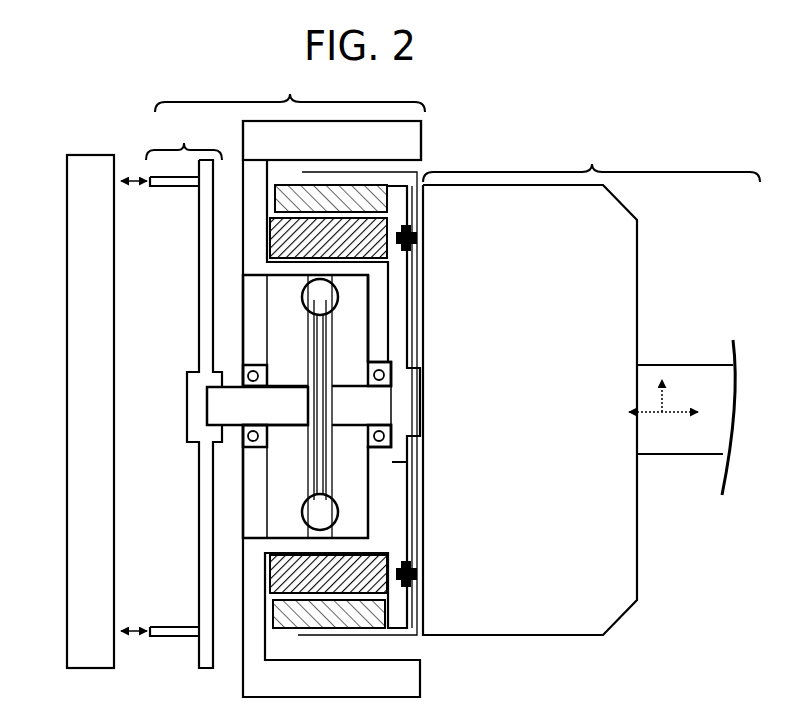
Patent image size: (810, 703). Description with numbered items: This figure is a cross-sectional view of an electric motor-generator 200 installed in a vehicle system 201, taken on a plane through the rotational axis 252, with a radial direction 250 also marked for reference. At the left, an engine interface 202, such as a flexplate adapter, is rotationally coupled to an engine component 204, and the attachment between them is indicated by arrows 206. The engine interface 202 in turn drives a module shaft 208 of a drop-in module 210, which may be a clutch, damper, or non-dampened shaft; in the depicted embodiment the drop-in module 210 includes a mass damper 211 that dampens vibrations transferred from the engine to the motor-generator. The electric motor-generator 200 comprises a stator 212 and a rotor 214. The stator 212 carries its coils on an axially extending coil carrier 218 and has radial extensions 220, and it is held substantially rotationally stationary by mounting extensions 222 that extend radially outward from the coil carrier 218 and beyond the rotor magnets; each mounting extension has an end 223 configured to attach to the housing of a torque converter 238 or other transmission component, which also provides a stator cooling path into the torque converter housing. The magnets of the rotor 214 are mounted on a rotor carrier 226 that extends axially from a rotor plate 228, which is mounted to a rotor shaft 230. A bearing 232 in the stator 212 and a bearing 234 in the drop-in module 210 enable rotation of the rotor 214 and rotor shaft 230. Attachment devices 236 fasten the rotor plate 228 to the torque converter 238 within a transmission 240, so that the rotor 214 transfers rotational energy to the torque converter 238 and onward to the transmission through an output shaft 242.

The electric motor-generator 200 is at (290, 89).
The vehicle system 201 is at (728, 122).
The engine interface 202 is at (184, 139).
The engine component 204 is at (67, 182).
The arrows 206 is at (141, 185).
The module shaft 208 is at (233, 386).
The drop-in module 210 is at (240, 287).
The mass damper 211 is at (294, 480).
The stator 212 is at (235, 243).
The rotor 214 is at (372, 167).
The coil carrier 218 is at (283, 277).
The radial extensions 220 is at (368, 303).
The mounting extensions 222 is at (332, 140).
The end 223 is at (436, 152).
The rotor carrier 226 is at (303, 176).
The rotor plate 228 is at (416, 287).
The rotor shaft 230 is at (345, 403).
The bearing 232 is at (379, 368).
The bearing 234 is at (261, 366).
The attachment devices 236 is at (419, 238).
The torque converter 238 is at (591, 159).
The transmission 240 is at (749, 250).
The output shaft 242 is at (689, 364).
The radial direction 250 is at (660, 390).
The rotational axis 252 is at (677, 415).